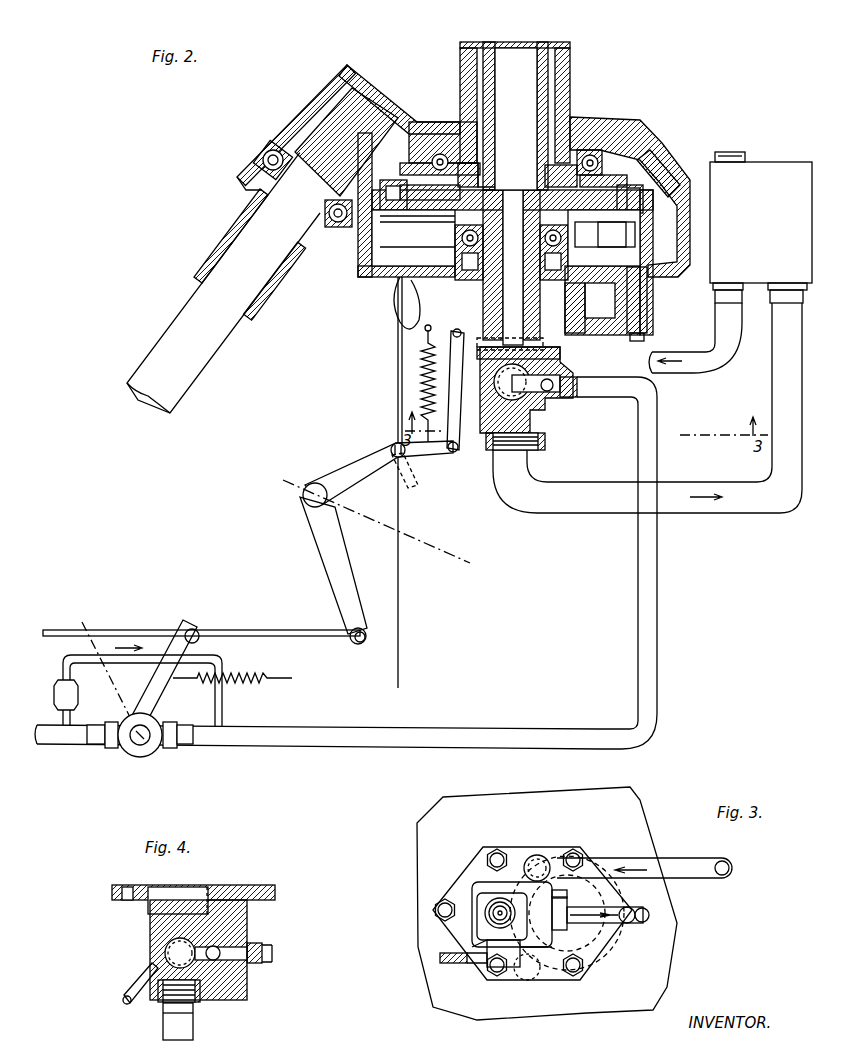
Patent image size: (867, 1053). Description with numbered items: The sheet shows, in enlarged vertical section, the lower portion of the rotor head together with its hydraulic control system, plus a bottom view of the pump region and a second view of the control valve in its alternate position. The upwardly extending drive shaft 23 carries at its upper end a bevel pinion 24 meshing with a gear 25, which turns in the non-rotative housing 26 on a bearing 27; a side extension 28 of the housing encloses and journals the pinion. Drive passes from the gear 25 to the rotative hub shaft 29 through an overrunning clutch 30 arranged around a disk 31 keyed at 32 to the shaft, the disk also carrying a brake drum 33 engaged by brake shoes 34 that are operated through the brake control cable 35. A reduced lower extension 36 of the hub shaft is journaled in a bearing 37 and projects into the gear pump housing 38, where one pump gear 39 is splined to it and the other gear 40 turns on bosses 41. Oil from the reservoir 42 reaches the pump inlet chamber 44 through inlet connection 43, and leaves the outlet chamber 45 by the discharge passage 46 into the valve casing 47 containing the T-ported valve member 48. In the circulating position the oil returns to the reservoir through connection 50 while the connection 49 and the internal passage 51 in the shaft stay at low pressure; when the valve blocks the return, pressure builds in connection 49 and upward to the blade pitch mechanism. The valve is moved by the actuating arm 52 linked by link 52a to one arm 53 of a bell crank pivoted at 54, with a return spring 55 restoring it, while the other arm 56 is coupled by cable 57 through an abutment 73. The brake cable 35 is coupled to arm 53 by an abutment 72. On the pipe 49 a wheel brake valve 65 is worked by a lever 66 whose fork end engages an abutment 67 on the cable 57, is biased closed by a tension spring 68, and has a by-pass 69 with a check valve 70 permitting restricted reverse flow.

In FIG. 2, the drive shaft 23 is at (196, 370).
In FIG. 2, the bevel pinion 24 is at (328, 117).
In FIG. 2, the gear 25 is at (664, 158).
In FIG. 2, the non-rotative housing 26 is at (628, 128).
In FIG. 2, the bearing 27 is at (597, 155).
In FIG. 2, the housing extension 28 is at (282, 128).
In FIG. 2, the rotative hub shaft 29 is at (490, 44).
In FIG. 2, the overrunning clutch 30 is at (407, 205).
In FIG. 2, the disk 31 is at (448, 172).
In FIG. 2, the key 32 is at (487, 170).
In FIG. 2, the brake drum 33 is at (372, 255).
In FIG. 2, the brake shoes 34 is at (393, 266).
In FIG. 2, the brake control cable 35 is at (397, 346).
In FIG. 2, the reduced lower extension 36 is at (568, 257).
In FIG. 2, the bearing 37 is at (560, 234).
In FIG. 2, the gear pump housing 38 is at (574, 333).
In FIG. 2, the pump gear 39 is at (560, 350).
In FIG. 3, the pump gear 39 is at (470, 886).
In FIG. 2, the pump gear 40 is at (638, 330).
In FIG. 3, the pump gear 40 is at (600, 951).
In FIG. 2, the bosses 41 is at (606, 247).
In FIG. 2, the reservoir 42 is at (792, 162).
In FIG. 2, the inlet connection 43 is at (690, 368).
In FIG. 3, the inlet connection 43 is at (703, 877).
In FIG. 3, the inlet chamber 44 is at (534, 855).
In FIG. 3, the outlet chamber 45 is at (562, 970).
In FIG. 2, the discharge passage 46 is at (578, 381).
In FIG. 3, the discharge passage 46 is at (528, 980).
In FIG. 4, the discharge passage 46 is at (242, 940).
In FIG. 2, the valve casing 47 is at (546, 408).
In FIG. 3, the valve casing 47 is at (500, 951).
In FIG. 2, the valve member 48 is at (488, 438).
In FIG. 3, the valve member 48 is at (492, 880).
In FIG. 4, the valve member 48 is at (205, 970).
In FIG. 2, the connection 49 is at (658, 417).
In FIG. 3, the connection 49 is at (616, 926).
In FIG. 4, the connection 49 is at (268, 961).
In FIG. 2, the connection 50 is at (568, 490).
In FIG. 4, the connection 50 is at (195, 1028).
In FIG. 2, the internal passage 51 is at (530, 90).
In FIG. 2, the actuating arm 52 is at (461, 380).
In FIG. 3, the actuating arm 52 is at (470, 961).
In FIG. 4, the actuating arm 52 is at (140, 976).
In FIG. 2, the link 52a is at (458, 368).
In FIG. 3, the link 52a is at (440, 958).
In FIG. 2, the bell crank arm 53 is at (417, 463).
In FIG. 2, the bell crank pivot 54 is at (313, 483).
In FIG. 2, the return spring 55 is at (420, 384).
In FIG. 2, the bell crank arm 56 is at (330, 601).
In FIG. 2, the cable 57 is at (121, 628).
In FIG. 2, the valve 65 is at (141, 757).
In FIG. 2, the lever 66 is at (166, 726).
In FIG. 2, the abutment 67 is at (196, 628).
In FIG. 2, the tension spring 68 is at (240, 673).
In FIG. 2, the by-pass 69 is at (222, 703).
In FIG. 2, the check valve 70 is at (77, 698).
In FIG. 2, the abutment 72 is at (391, 448).
In FIG. 2, the abutment 73 is at (362, 645).